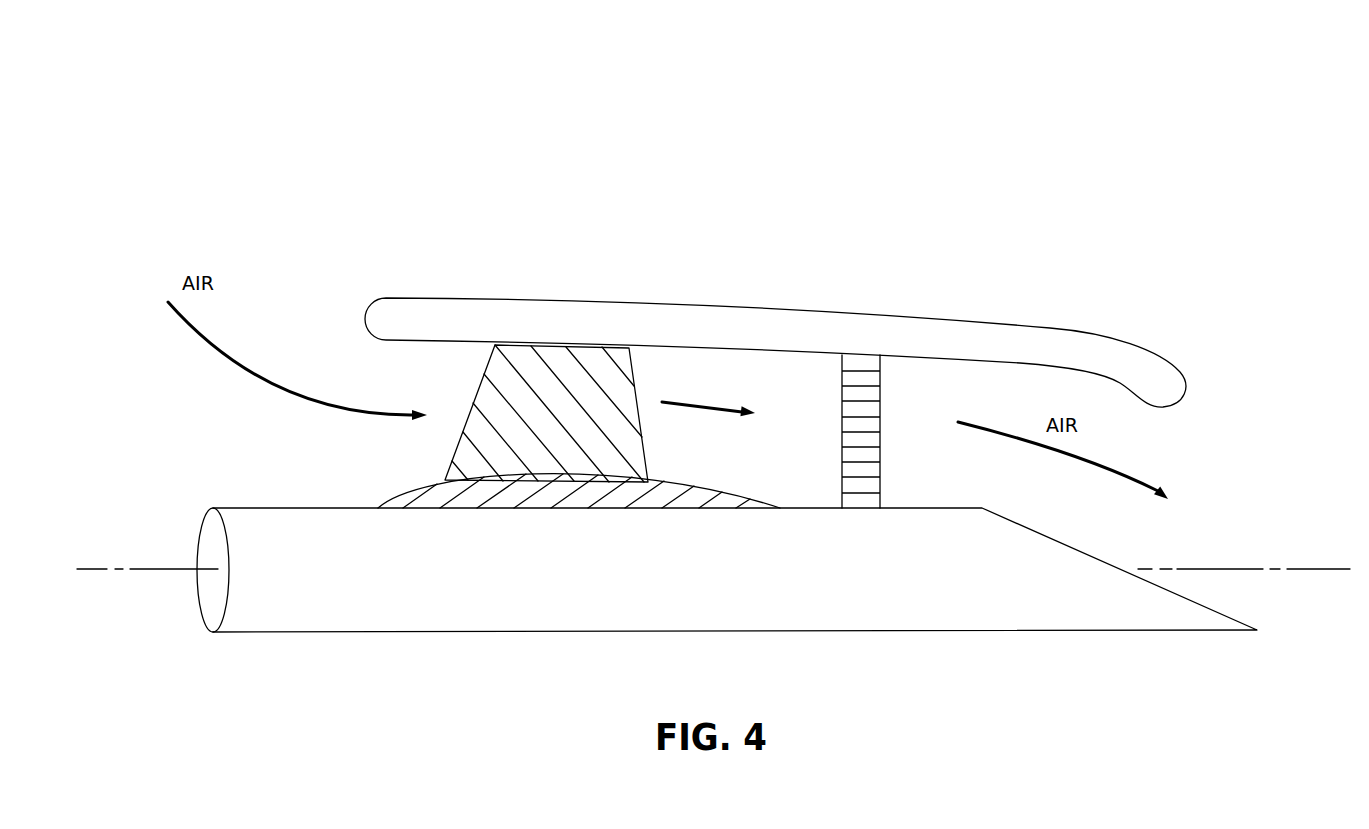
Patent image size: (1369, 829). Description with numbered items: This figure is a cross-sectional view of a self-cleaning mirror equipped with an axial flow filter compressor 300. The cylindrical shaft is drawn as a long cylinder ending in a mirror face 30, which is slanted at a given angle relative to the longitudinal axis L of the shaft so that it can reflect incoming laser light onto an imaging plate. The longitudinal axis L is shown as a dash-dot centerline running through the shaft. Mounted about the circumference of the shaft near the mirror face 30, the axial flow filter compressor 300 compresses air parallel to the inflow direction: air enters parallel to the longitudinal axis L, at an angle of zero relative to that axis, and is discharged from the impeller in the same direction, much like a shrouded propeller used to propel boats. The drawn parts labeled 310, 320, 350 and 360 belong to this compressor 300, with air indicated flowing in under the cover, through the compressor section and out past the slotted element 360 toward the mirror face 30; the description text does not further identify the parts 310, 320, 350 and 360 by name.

The axial flow filter compressor 300 is at (758, 326).
The base plate 310 is at (423, 498).
The wedge body 320 is at (553, 360).
The hood / cover 350 is at (815, 320).
The grille / filter 360 is at (880, 395).
The mirror face 30 is at (1110, 563).
The longitudinal axis L is at (1313, 565).